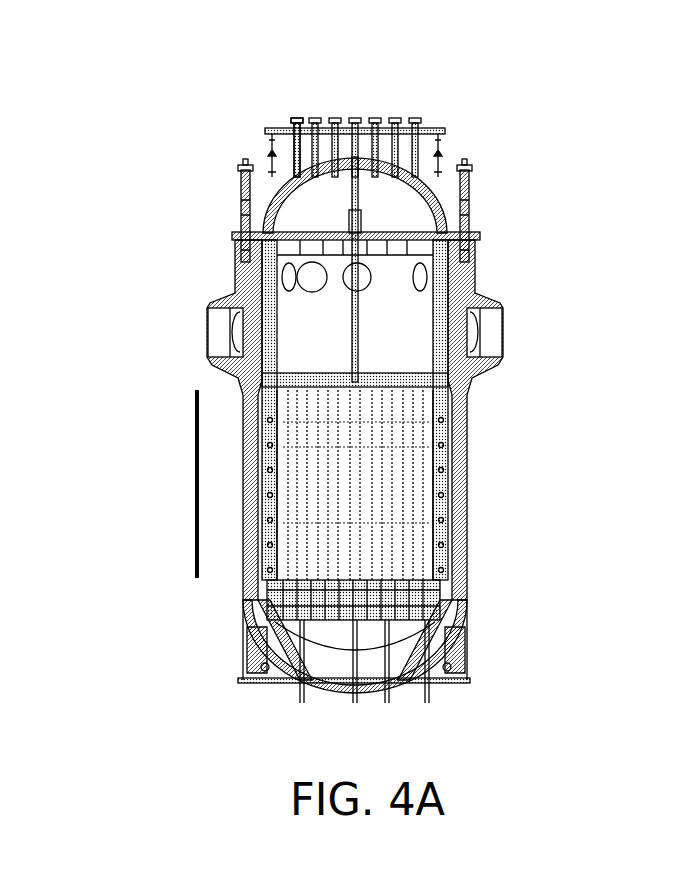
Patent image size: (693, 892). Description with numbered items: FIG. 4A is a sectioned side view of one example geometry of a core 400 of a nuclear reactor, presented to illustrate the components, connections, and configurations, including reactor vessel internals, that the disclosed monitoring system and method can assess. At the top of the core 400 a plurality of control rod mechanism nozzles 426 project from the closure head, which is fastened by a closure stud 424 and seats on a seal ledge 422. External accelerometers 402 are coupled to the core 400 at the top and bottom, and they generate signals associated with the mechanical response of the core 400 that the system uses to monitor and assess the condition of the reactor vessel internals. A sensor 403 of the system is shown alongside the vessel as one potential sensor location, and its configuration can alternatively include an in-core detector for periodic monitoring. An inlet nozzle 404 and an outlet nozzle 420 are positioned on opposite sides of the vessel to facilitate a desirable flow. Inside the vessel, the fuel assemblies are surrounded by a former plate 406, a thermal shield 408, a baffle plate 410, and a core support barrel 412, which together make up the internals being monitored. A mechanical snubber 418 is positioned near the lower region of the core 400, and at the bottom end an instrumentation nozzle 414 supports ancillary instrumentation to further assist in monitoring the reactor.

The core 400 is at (125, 153).
The external accelerometers 402 is at (285, 155).
The sensor 403 is at (173, 484).
The inlet nozzle 404 is at (459, 333).
The former plate 406 is at (445, 410).
The thermal shield 408 is at (458, 432).
The baffle plate 410 is at (447, 482).
The core support barrel 412 is at (452, 507).
The instrumentation nozzle 414 is at (437, 697).
The mechanical snubber 418 is at (263, 606).
The outlet nozzle 420 is at (230, 333).
The seal ledge 422 is at (229, 234).
The closure stud 424 is at (242, 167).
The control rod mechanism nozzles 426 is at (288, 114).